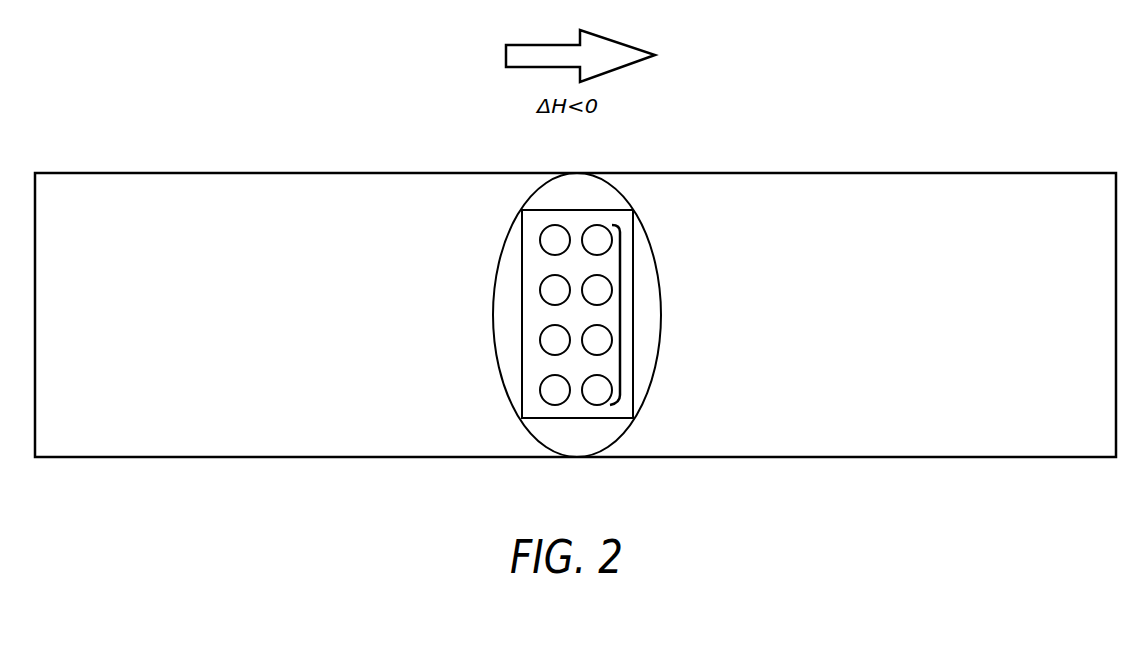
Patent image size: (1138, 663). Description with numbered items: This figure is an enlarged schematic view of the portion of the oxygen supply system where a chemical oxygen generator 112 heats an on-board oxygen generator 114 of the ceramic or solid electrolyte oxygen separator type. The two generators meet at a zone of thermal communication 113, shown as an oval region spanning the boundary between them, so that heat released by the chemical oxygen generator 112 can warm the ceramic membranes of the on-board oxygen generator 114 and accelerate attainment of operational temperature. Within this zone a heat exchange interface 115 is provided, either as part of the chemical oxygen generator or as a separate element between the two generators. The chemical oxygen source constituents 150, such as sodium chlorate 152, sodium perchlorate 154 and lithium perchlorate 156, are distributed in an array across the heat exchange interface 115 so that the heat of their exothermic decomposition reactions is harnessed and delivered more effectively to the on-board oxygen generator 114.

The chemical oxygen generator 112 is at (164, 182).
The zone of thermal communication 113 is at (567, 190).
The on-board oxygen generator 114 is at (957, 185).
The heat exchange interface 115 is at (530, 272).
The chemical oxygen source constituents 150 is at (625, 310).
The sodium chlorate 152 is at (598, 232).
The sodium perchlorate 154 is at (597, 333).
The lithium perchlorate 156 is at (552, 390).